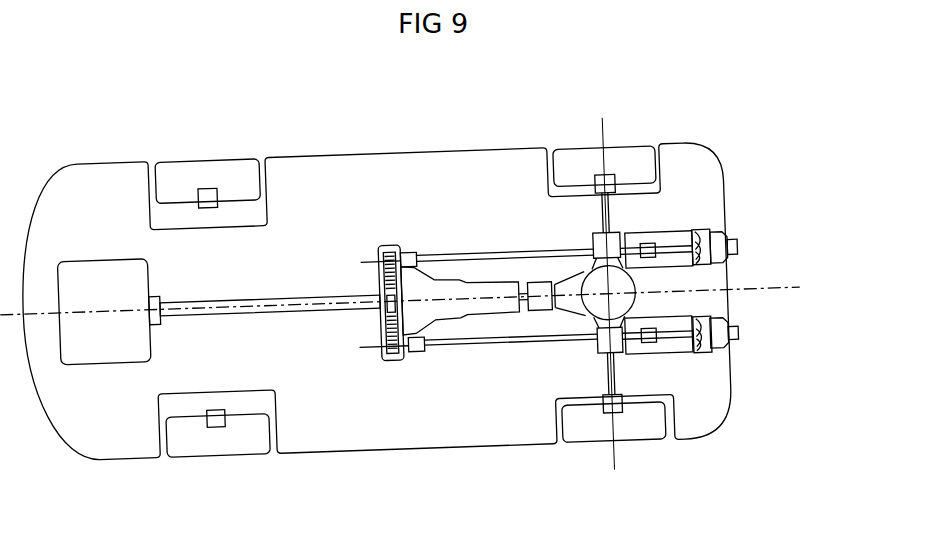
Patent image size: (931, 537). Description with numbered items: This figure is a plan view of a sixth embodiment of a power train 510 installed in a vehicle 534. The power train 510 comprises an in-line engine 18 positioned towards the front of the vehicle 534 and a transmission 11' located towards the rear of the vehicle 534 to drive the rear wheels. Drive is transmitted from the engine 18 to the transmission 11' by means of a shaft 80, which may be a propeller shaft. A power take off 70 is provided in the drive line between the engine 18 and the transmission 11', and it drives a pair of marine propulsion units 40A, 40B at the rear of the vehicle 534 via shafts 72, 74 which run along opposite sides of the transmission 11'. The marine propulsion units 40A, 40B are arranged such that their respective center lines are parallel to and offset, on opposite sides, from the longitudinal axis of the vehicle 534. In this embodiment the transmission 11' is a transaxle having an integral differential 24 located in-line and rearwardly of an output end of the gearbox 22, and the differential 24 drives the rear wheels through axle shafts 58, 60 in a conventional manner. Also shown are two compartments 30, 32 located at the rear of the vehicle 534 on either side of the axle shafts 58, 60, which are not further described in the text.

The power train 510 is at (119, 230).
The vehicle 534 is at (390, 211).
The in-line engine 18 is at (100, 326).
The shaft 80 is at (247, 298).
The power take off 70 is at (391, 368).
The shaft 72 is at (479, 255).
The shaft 74 is at (468, 344).
The gearbox 22 is at (500, 296).
The differential 24 is at (618, 295).
The transmission 11' is at (400, 312).
The front compartment 30 is at (595, 168).
The rear compartment 32 is at (578, 436).
The axle shaft 60 is at (612, 210).
The axle shaft 58 is at (612, 408).
The marine propulsion unit 40A is at (698, 238).
The marine propulsion unit 40B is at (698, 364).